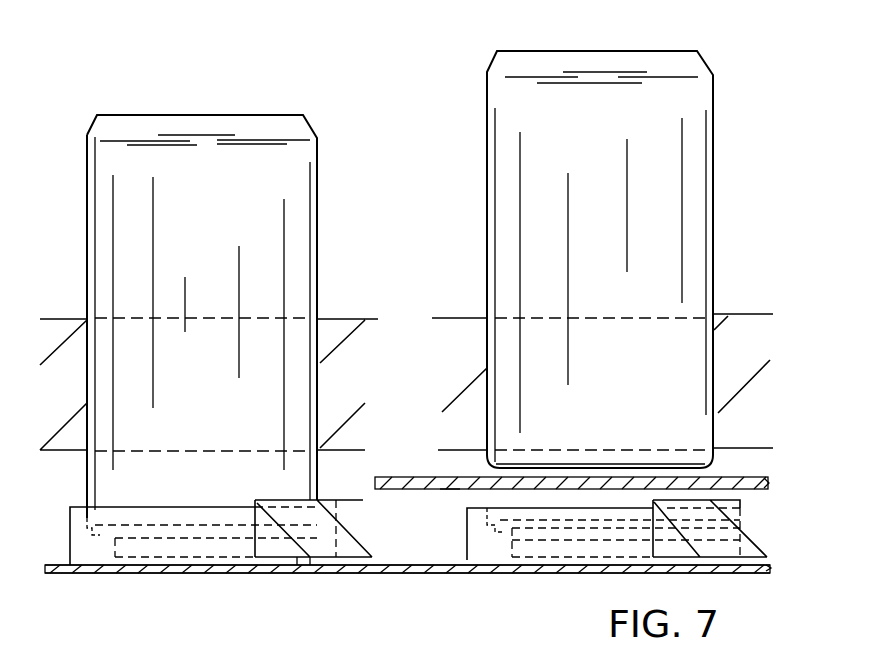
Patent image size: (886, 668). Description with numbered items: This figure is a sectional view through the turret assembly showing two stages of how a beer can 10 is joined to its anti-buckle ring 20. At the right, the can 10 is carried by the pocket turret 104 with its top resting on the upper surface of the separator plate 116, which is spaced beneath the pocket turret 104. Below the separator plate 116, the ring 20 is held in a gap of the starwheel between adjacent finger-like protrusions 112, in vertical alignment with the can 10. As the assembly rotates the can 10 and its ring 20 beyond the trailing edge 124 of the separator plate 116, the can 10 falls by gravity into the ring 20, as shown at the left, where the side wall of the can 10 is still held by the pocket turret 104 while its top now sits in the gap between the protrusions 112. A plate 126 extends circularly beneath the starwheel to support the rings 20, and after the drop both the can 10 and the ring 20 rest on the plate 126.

The beer can 10 is at (308, 152).
The anti-buckle ring 20 is at (70, 530).
The pocket turret 104 is at (57, 330).
The finger-like protrusion 112 is at (352, 550).
The separator plate 116 is at (440, 492).
The trailing edge 124 is at (375, 480).
The plate 126 is at (220, 570).